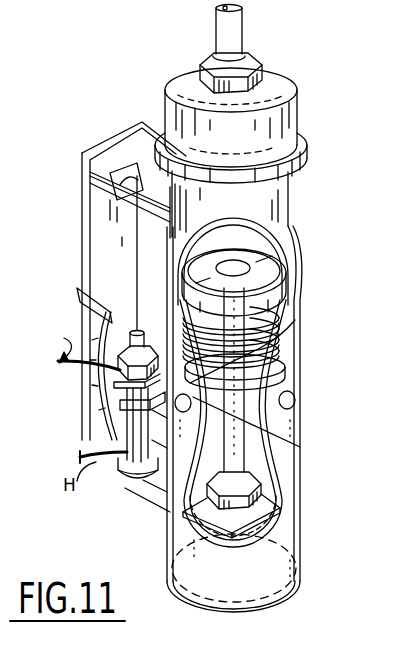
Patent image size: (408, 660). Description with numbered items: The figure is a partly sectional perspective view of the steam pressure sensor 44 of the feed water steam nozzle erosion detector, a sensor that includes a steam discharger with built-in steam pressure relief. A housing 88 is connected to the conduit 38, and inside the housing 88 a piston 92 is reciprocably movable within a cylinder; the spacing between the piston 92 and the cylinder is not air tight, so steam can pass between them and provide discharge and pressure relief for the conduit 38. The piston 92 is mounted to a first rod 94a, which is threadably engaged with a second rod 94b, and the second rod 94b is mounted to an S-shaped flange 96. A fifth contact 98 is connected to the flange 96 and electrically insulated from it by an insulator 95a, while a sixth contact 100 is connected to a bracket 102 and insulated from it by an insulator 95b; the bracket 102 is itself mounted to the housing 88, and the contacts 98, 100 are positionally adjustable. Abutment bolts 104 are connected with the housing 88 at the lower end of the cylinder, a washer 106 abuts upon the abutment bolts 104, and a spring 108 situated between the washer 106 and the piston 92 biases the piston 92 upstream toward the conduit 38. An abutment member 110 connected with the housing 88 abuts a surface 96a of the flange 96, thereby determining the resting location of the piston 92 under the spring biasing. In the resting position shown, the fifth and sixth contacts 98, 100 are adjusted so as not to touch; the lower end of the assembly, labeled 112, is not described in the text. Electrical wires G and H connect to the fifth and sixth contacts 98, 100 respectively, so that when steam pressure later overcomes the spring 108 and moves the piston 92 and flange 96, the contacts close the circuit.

The conduit 38 is at (244, 27).
The steam pressure sensor 44 is at (310, 114).
The housing 88 is at (290, 188).
The piston 92 is at (292, 300).
The spring 108 is at (295, 320).
The first rod 94a is at (300, 347).
The washer 106 is at (300, 371).
The abutment bolts 104 is at (297, 385).
The second rod 94b is at (248, 419).
The housing 112 is at (255, 613).
The bracket 102 is at (82, 245).
The insulator 95a is at (127, 345).
The sixth contact 100 is at (124, 382).
The fifth contact 98 is at (127, 401).
The insulator 95b is at (120, 417).
The S-shaped flange 96 is at (157, 487).
The abutment member 110 is at (153, 487).
The surface 96a is at (147, 493).